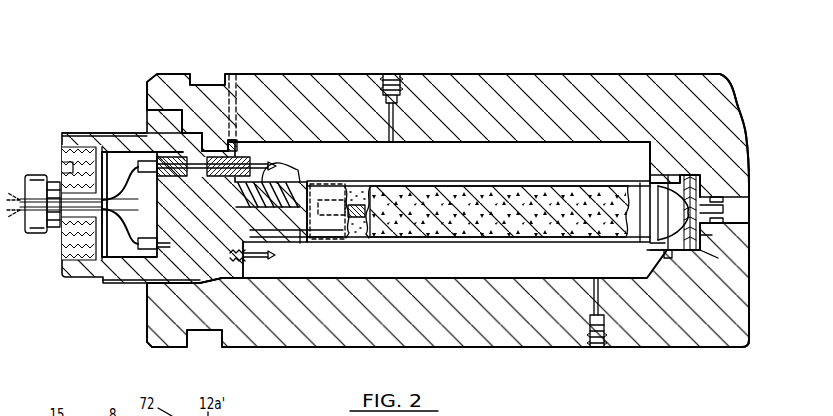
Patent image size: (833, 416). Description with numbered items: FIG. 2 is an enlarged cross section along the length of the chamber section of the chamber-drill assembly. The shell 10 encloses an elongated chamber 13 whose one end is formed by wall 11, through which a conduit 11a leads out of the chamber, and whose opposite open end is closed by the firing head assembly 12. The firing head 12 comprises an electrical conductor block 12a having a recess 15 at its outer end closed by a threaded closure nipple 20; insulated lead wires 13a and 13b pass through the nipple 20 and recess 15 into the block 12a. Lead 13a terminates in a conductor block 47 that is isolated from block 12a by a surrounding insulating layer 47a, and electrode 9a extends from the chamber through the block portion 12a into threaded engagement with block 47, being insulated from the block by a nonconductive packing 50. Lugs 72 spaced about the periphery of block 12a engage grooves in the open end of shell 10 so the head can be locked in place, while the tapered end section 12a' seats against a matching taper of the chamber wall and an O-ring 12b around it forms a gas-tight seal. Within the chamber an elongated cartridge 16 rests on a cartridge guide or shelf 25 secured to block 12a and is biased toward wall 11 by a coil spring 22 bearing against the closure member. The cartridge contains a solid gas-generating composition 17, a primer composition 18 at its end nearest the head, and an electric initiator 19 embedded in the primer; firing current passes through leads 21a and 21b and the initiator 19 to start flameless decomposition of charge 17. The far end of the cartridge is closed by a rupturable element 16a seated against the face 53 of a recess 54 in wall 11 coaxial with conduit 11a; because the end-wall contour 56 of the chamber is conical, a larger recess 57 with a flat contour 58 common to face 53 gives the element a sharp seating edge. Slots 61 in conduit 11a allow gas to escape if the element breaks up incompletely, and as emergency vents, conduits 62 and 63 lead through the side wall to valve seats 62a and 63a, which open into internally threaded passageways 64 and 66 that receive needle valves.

The shell 10 is at (474, 74).
The wall 11 is at (727, 152).
The conduit 11a is at (702, 202).
The firing head assembly 12 is at (126, 287).
The electrical conductor block 12a is at (156, 324).
The tapered end section 12a' is at (207, 328).
The O-ring 12b is at (242, 273).
The chamber 13 is at (563, 165).
The lead wire 13a is at (108, 135).
The lead wire 13b is at (108, 282).
The recess 15 is at (65, 270).
The cartridge 16 is at (478, 182).
The rupturable element 16a is at (672, 207).
The solid composition 17 is at (507, 210).
The primer composition 18 is at (357, 203).
The electric initiator 19 is at (328, 208).
The closure nipple 20 is at (67, 143).
The lead 21a is at (300, 138).
The lead 21b is at (277, 252).
The coil spring 22 is at (253, 140).
The cartridge guide 25 is at (303, 243).
The electrical conductor block 47 is at (147, 140).
The insulating layer 47a is at (178, 144).
The nonconductive packing 50 is at (229, 73).
The face 53 is at (718, 258).
The recess 54 is at (700, 237).
The contour 56 is at (664, 249).
The recess 57 is at (668, 258).
The flat contour 58 is at (668, 175).
The slots 61 is at (720, 213).
The conduit 62 is at (395, 110).
The valve seat 62a is at (392, 76).
The conduit 63 is at (595, 302).
The valve seat 63a is at (593, 318).
The internally threaded passageway 64 is at (395, 80).
The internally threaded passageway 66 is at (606, 347).
The lugs 72 is at (188, 123).
The electrode 9a is at (270, 140).